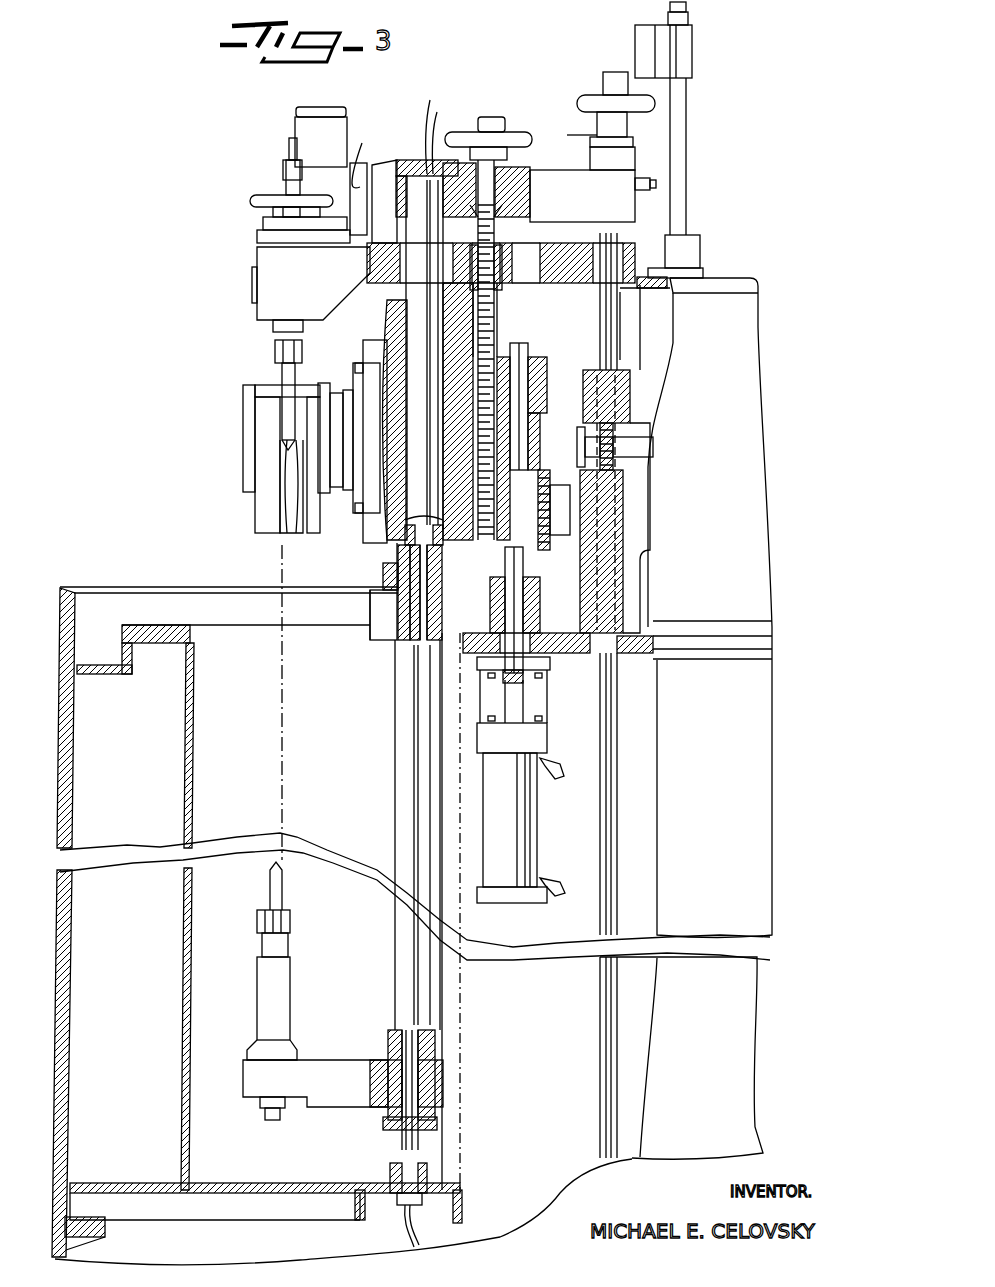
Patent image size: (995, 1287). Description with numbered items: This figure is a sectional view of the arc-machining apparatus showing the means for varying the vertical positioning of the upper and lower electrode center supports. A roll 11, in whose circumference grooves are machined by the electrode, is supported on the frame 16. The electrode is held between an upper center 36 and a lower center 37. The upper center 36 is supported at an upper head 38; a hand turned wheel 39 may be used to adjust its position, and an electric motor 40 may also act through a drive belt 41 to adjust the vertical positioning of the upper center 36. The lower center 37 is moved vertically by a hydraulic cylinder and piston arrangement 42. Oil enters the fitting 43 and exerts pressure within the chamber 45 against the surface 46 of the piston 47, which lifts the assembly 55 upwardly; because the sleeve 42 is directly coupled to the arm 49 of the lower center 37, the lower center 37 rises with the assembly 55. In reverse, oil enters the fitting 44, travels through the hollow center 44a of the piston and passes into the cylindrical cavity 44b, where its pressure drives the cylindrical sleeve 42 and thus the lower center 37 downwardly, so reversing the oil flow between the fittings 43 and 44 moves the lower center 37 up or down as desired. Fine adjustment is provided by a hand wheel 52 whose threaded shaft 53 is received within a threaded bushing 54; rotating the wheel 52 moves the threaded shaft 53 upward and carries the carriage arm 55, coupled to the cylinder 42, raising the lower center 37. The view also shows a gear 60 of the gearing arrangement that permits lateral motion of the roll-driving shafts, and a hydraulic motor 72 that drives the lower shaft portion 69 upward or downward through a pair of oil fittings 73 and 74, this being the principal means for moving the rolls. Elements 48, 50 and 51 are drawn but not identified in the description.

The roll 11 is at (265, 500).
The frame 16 is at (158, 646).
The upper center 36 is at (284, 410).
The lower center 37 is at (284, 893).
The upper head 38 is at (275, 278).
The hand turned wheel 39 is at (252, 203).
The electric motor 40 is at (332, 136).
The drive belt 41 is at (257, 236).
The hydraulic cylinder and piston arrangement (sleeve) 42 is at (396, 704).
The fitting 43 is at (432, 123).
The fitting 44 is at (400, 1208).
The hollow center 44a is at (416, 630).
The cylindrical cavity 44b is at (398, 635).
The chamber 45 is at (412, 162).
The surface 46 is at (405, 527).
The piston 47 is at (497, 556).
The lower bearing 48 is at (428, 1116).
The arm 49 is at (331, 1105).
The lower shaft portion 50 is at (412, 1056).
The bearing sleeve 51 is at (395, 578).
The hand wheel 52 is at (527, 130).
The threaded shaft 53 is at (496, 224).
The threaded bushing 54 is at (503, 273).
The carriage arm (assembly) 55 is at (548, 180).
The gear 60 is at (546, 470).
The lower shaft portion 69 is at (515, 611).
The hydraulic motor 72 is at (517, 853).
The oil fitting 73 is at (558, 898).
The oil fitting 74 is at (559, 779).